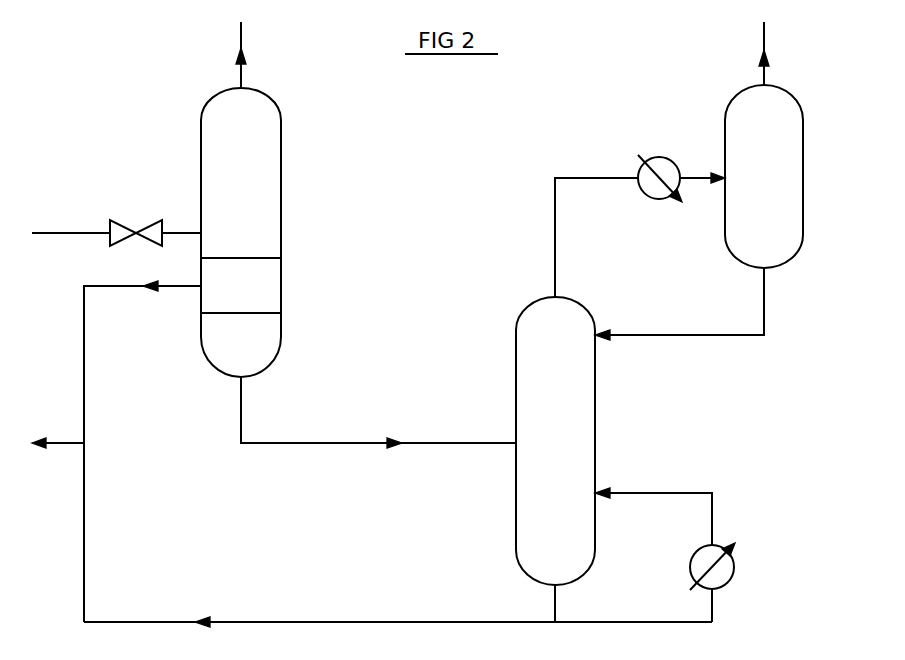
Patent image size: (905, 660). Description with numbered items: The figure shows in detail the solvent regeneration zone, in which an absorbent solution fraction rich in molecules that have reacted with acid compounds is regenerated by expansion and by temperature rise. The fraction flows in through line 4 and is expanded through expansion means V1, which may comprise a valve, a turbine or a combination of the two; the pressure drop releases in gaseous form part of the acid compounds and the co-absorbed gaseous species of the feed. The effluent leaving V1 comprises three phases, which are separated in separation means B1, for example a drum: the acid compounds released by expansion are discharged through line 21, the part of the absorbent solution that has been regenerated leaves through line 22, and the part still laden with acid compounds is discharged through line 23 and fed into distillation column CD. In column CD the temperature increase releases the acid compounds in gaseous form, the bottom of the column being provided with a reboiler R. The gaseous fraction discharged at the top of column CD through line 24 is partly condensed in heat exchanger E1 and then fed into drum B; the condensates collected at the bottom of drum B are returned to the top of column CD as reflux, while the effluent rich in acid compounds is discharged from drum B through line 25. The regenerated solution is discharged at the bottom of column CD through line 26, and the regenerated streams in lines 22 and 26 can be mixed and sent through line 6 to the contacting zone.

The line 4 is at (55, 232).
The line 21 is at (243, 38).
The line 22 is at (113, 287).
The line 23 is at (313, 443).
The line 24 is at (555, 203).
The line 25 is at (766, 37).
The line 26 is at (160, 622).
The line 6 is at (66, 445).
The expansion means V1 is at (136, 219).
The separation means B1 is at (281, 180).
The drum B is at (803, 137).
The distillation column CD is at (595, 375).
The heat exchanger E1 is at (660, 162).
The reboiler R is at (659, 555).